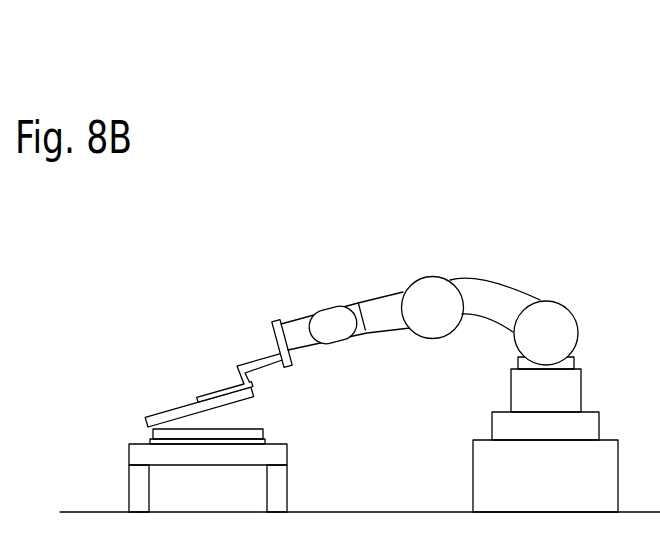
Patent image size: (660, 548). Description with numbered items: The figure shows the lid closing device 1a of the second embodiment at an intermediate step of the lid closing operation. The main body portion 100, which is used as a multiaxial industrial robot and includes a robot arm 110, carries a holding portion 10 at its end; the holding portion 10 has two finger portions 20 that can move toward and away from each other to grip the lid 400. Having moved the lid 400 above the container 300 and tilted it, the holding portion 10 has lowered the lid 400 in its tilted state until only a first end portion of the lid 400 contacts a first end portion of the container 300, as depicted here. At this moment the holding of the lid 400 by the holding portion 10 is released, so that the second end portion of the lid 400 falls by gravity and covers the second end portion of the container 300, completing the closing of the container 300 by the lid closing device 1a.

The lid closing device 1a is at (220, 218).
The holding portion 10 is at (303, 298).
The finger portions 20 is at (222, 383).
The main body portion 100 is at (525, 248).
The robot arm 110 is at (520, 290).
The container 300 is at (150, 438).
The lid 400 is at (172, 403).